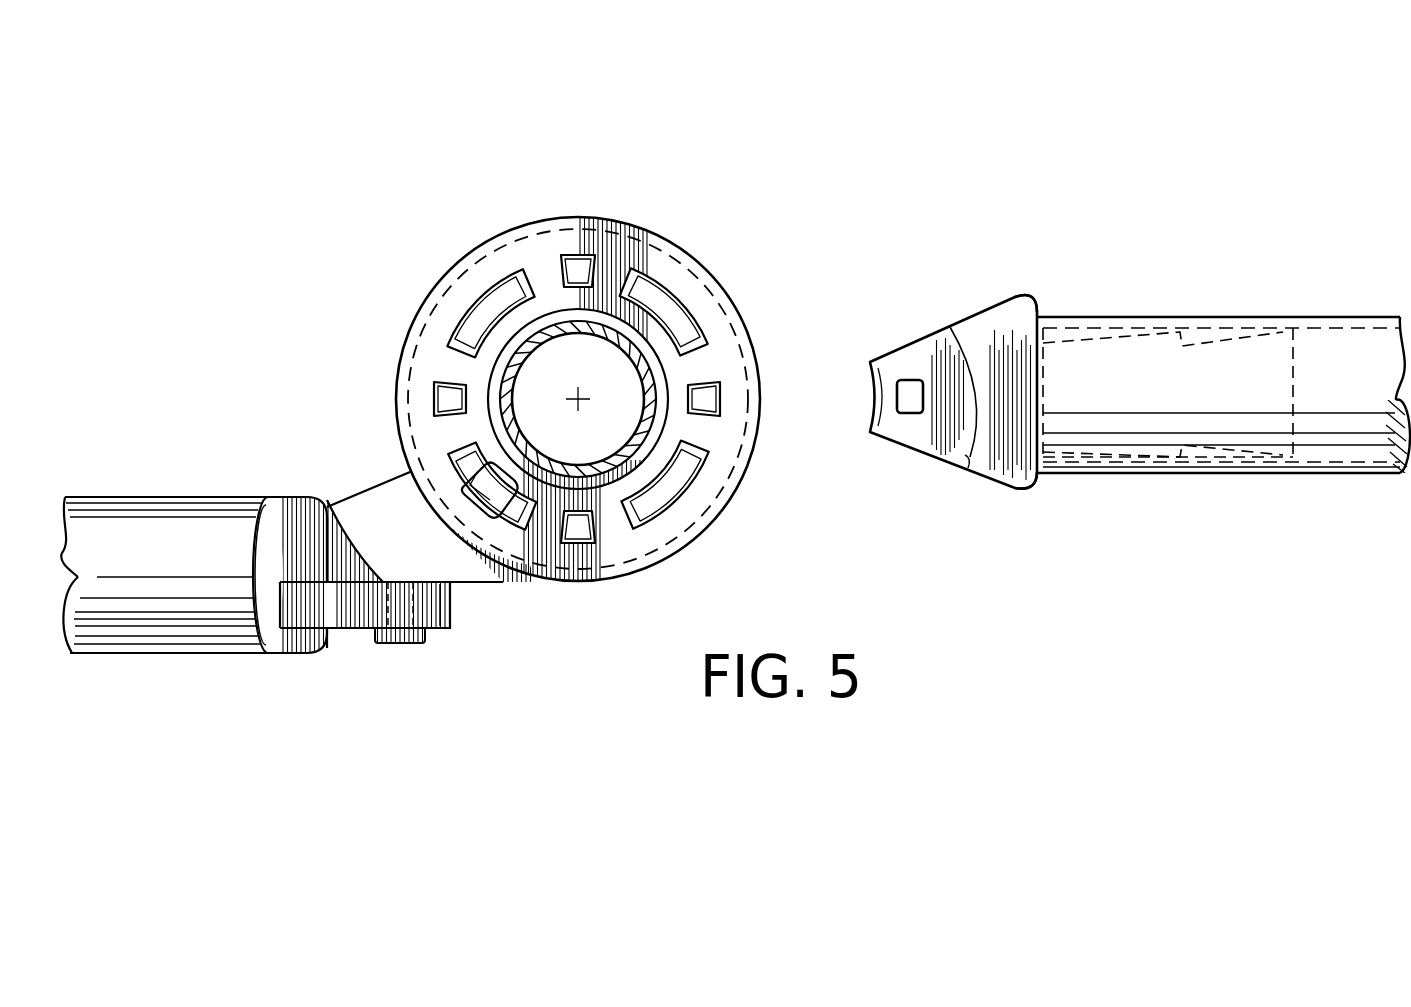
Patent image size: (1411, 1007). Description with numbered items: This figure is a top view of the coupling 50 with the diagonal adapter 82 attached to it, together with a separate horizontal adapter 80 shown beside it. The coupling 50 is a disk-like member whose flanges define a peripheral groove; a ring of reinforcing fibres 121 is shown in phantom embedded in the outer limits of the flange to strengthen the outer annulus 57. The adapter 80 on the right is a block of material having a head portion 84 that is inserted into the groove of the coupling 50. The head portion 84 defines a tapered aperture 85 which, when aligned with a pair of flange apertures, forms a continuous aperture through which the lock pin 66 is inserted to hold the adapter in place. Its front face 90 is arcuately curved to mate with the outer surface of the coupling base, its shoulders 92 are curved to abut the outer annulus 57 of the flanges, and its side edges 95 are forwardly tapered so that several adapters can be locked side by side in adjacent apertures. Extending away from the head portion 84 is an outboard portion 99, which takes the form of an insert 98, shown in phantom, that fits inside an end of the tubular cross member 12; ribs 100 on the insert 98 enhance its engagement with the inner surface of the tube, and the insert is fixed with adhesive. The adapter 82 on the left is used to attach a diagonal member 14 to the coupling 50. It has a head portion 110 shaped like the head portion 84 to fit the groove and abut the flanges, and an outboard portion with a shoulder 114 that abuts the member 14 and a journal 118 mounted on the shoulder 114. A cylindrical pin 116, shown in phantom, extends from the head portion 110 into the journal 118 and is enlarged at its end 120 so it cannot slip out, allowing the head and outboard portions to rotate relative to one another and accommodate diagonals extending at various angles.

The tubular cross member 12 is at (1155, 470).
The diagonal member 14 is at (183, 497).
The coupling 50 is at (577, 240).
The outer annulus 57 is at (735, 285).
The lock pin 66 is at (540, 540).
The adapter 80 is at (1003, 488).
The adapter 82 is at (385, 508).
The head portion 84 is at (970, 458).
The aperture 85 is at (905, 416).
The front face 90 is at (870, 395).
The shoulders 92 is at (984, 313).
The edges 95 is at (1022, 297).
The insert 98 is at (1120, 365).
The outboard portion 99 is at (1235, 357).
The ribs 100 is at (1172, 338).
The head portion 110 is at (490, 583).
The shoulder 114 is at (318, 653).
The cylindrical pin 116 is at (435, 630).
The journal 118 is at (450, 603).
The enlarged end 120 is at (390, 645).
The ring of reinforcing fibres 121 is at (433, 272).